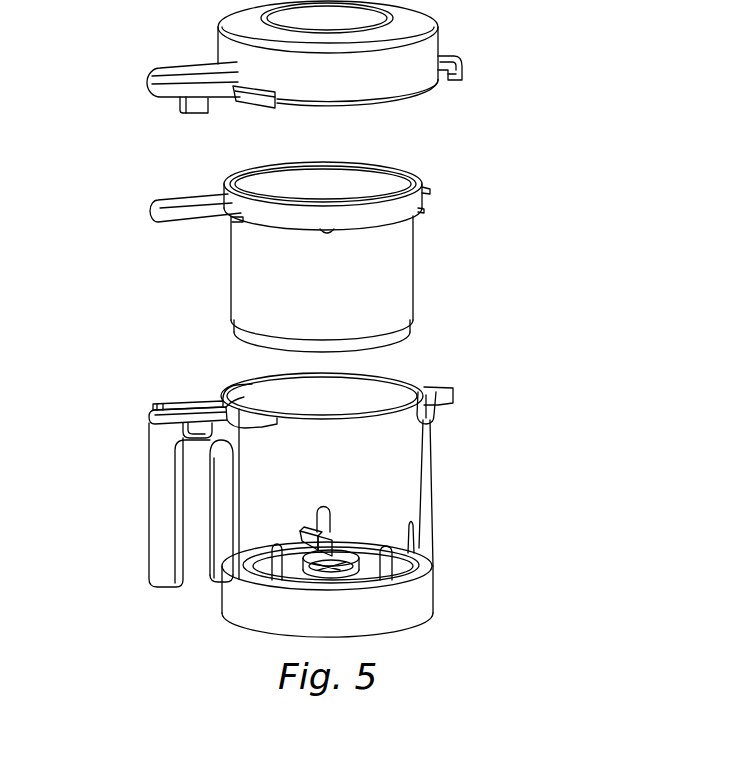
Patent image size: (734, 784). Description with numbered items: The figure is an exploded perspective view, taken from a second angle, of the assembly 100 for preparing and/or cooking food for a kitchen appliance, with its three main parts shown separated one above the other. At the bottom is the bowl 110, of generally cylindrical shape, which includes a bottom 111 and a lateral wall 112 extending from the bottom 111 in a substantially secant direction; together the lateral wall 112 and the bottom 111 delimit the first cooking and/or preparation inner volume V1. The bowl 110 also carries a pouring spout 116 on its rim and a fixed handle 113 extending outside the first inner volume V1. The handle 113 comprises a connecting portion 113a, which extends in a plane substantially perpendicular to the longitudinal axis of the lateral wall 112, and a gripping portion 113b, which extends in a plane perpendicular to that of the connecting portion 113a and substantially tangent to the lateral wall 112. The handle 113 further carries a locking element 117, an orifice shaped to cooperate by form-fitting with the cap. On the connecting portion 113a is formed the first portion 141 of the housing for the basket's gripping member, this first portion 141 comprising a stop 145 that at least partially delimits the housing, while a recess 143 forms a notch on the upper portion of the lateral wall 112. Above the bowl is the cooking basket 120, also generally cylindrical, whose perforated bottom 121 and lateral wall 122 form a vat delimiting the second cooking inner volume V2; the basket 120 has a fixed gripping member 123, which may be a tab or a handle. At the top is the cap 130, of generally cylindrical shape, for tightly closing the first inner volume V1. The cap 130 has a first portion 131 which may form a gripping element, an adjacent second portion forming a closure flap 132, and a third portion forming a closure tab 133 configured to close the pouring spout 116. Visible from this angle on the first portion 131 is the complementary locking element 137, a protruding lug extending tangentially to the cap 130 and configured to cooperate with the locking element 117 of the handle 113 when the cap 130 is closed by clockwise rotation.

The assembly 100 is at (199, 646).
The bowl 110 is at (448, 492).
The bottom 111 is at (396, 612).
The lateral wall 112 is at (428, 542).
The fixed handle 113 is at (126, 540).
The connecting portion 113a is at (188, 440).
The gripping portion 113b is at (160, 563).
The pouring spout 116 is at (443, 393).
The locking element 117 is at (187, 432).
The cooking basket 120 is at (449, 283).
The perforated bottom 121 is at (262, 343).
The lateral wall 122 is at (385, 260).
The fixed gripping member 123 is at (170, 206).
The cap 130 is at (447, 105).
The first portion 131 is at (182, 70).
The closure flap 132 is at (250, 100).
The closure tab 133 is at (453, 56).
The complementary locking element 137 is at (190, 107).
The first portion of the housing 141 is at (180, 420).
The recess 143 is at (240, 388).
The stop 145 is at (170, 405).
The first cooking and/or preparation inner volume V1 is at (373, 403).
The second cooking inner volume V2 is at (350, 196).